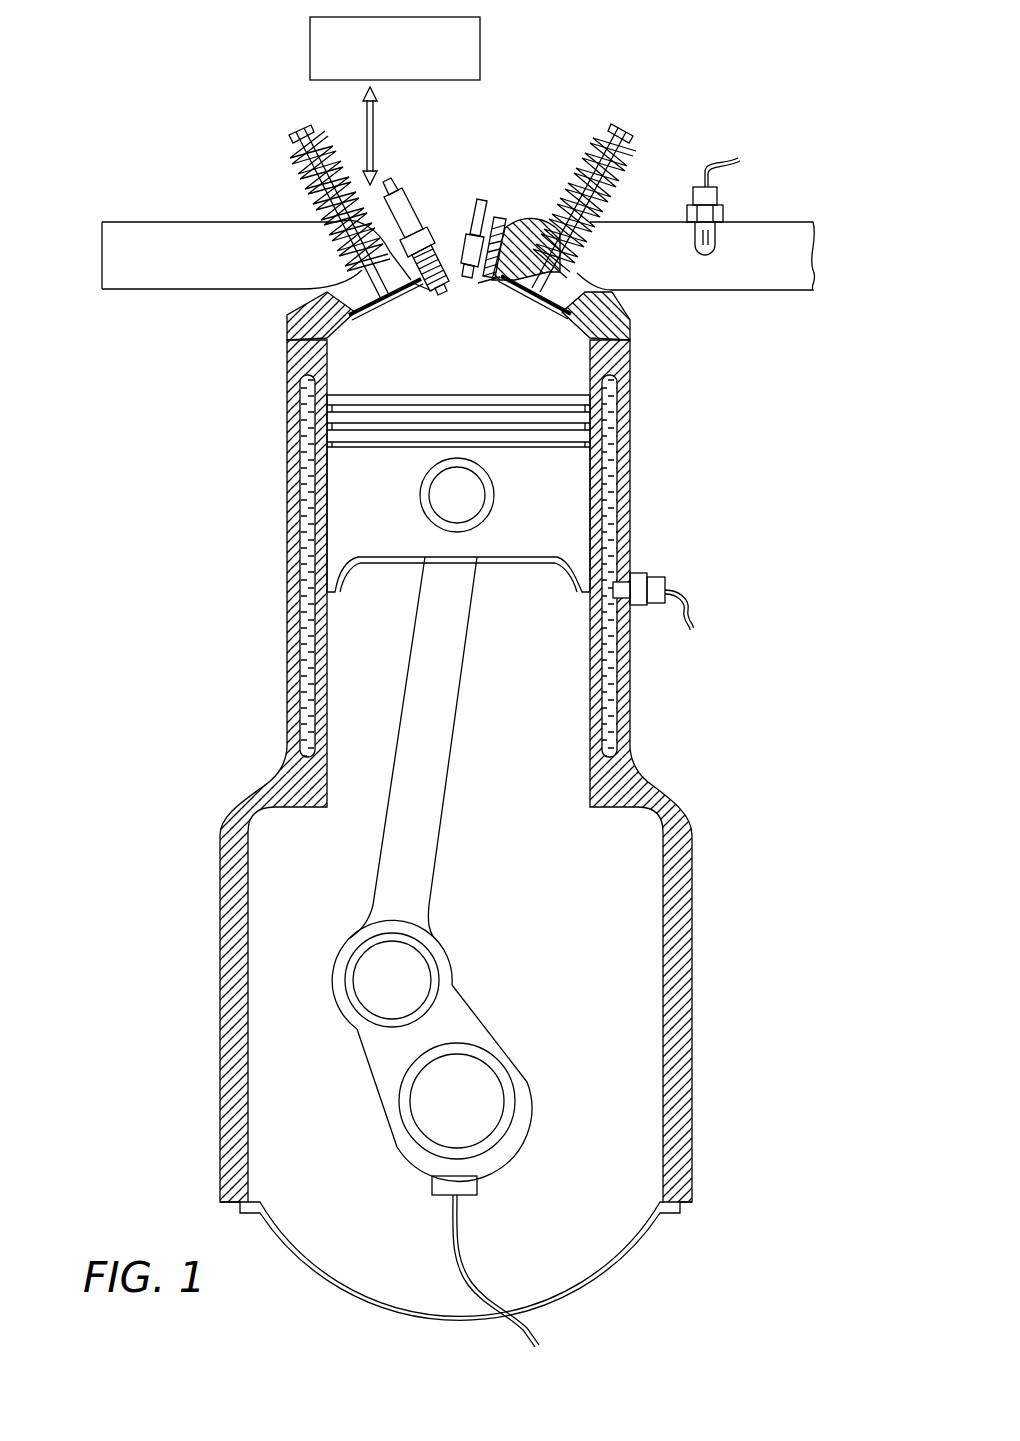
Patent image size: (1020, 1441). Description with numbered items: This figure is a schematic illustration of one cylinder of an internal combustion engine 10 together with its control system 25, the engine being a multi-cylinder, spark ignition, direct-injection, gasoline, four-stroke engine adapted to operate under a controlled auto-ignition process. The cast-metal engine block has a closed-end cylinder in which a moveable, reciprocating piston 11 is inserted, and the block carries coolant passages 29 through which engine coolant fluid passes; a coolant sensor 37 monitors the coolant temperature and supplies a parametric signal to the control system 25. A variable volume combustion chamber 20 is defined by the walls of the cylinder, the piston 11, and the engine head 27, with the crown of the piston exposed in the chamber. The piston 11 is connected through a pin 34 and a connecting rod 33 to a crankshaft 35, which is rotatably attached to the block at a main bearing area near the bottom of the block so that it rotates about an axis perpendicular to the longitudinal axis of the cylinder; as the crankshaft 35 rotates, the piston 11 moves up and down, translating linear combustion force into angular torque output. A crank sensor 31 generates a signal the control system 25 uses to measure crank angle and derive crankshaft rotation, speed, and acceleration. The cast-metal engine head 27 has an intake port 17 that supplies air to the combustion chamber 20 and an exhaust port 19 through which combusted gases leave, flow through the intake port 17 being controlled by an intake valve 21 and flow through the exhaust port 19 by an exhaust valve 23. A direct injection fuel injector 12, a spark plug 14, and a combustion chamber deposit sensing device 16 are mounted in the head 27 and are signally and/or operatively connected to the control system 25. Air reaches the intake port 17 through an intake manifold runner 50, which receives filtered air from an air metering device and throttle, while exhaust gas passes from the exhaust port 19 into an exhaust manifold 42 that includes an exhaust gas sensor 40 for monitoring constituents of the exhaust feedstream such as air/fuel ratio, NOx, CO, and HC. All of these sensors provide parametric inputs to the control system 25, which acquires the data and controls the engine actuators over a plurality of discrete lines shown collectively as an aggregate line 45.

The internal combustion engine 10 is at (133, 430).
The piston 11 is at (558, 500).
The direct injection fuel injector 12 is at (476, 218).
The spark plug 14 is at (400, 205).
The combustion chamber deposit sensing device 16 is at (503, 220).
The intake port 17 is at (340, 278).
The exhaust port 19 is at (607, 293).
The combustion chamber 20 is at (348, 368).
The intake valve 21 is at (337, 247).
The exhaust valve 23 is at (565, 263).
The control system 25 is at (473, 30).
The engine head 27 is at (612, 322).
The coolant passages 29 is at (610, 435).
The crank sensor 31 is at (437, 1185).
The connecting rod 33 is at (430, 660).
The pin 34 is at (450, 493).
The crankshaft 35 is at (395, 1100).
The coolant sensor 37 is at (655, 585).
The exhaust gas sensor 40 is at (723, 212).
The exhaust manifold 42 is at (800, 253).
The aggregate line 45 is at (367, 133).
The intake manifold runner 50 is at (180, 280).